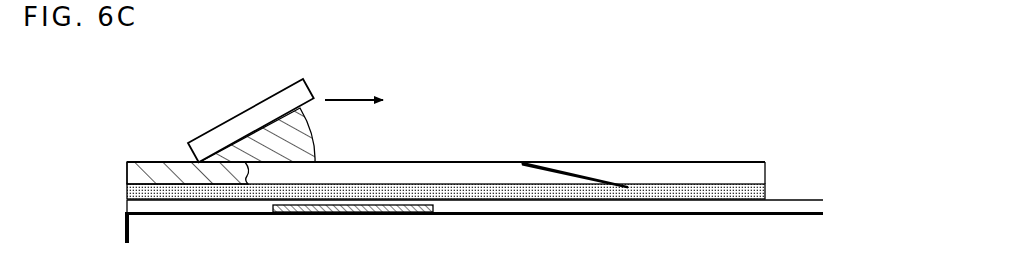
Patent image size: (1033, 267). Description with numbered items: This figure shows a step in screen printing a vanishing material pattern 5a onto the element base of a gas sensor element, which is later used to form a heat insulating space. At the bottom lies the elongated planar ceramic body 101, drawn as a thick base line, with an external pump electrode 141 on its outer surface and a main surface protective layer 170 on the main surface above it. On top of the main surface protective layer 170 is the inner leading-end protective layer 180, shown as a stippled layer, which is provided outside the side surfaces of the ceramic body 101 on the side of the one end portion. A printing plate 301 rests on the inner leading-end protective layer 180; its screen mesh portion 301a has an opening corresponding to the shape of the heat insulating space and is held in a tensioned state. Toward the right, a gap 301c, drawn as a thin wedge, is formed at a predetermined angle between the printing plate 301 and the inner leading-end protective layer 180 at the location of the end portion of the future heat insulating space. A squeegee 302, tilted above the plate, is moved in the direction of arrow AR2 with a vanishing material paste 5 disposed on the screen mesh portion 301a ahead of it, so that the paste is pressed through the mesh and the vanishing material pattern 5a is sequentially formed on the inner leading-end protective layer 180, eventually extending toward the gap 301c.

The printing plate 301 is at (678, 175).
The screen mesh portion 301a is at (412, 161).
The gap 301c is at (536, 177).
The inner leading-end protective layer 180 is at (767, 193).
The main surface protective layer 170 is at (813, 208).
The ceramic body 101 is at (815, 223).
The external pump electrode 141 is at (323, 215).
The vanishing material paste 5 is at (307, 133).
The vanishing material pattern 5a is at (162, 163).
The squeegee 302 is at (223, 130).
The arrow AR2 is at (342, 97).